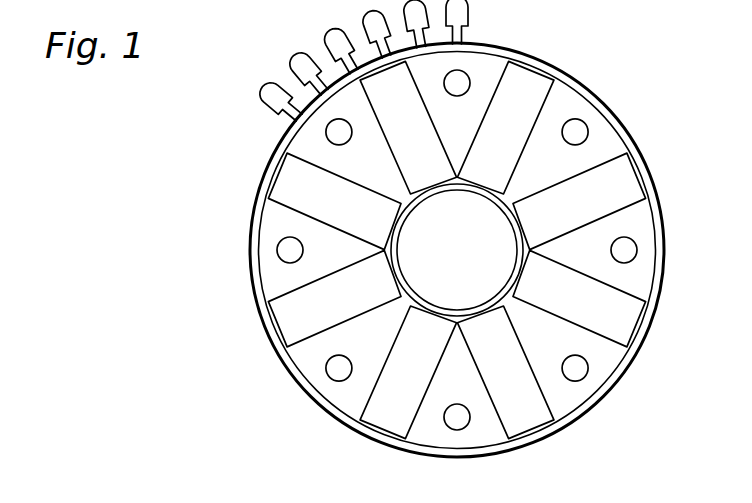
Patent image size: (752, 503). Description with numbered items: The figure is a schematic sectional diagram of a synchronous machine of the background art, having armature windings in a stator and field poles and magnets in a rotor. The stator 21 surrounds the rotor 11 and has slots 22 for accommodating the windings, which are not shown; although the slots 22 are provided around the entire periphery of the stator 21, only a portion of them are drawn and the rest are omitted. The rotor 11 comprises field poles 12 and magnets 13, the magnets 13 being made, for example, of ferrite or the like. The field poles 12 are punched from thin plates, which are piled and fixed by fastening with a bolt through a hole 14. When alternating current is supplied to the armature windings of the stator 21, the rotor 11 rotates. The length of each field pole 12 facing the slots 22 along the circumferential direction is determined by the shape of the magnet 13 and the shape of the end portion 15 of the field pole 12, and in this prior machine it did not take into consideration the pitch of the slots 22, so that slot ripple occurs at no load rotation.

The rotor 11 is at (486, 199).
The field pole 12 is at (583, 108).
The magnet 13 is at (530, 88).
The hole 14 is at (588, 130).
The end portion of the field pole 15 is at (638, 162).
The stator 21 is at (246, 197).
The slot 22 is at (263, 104).